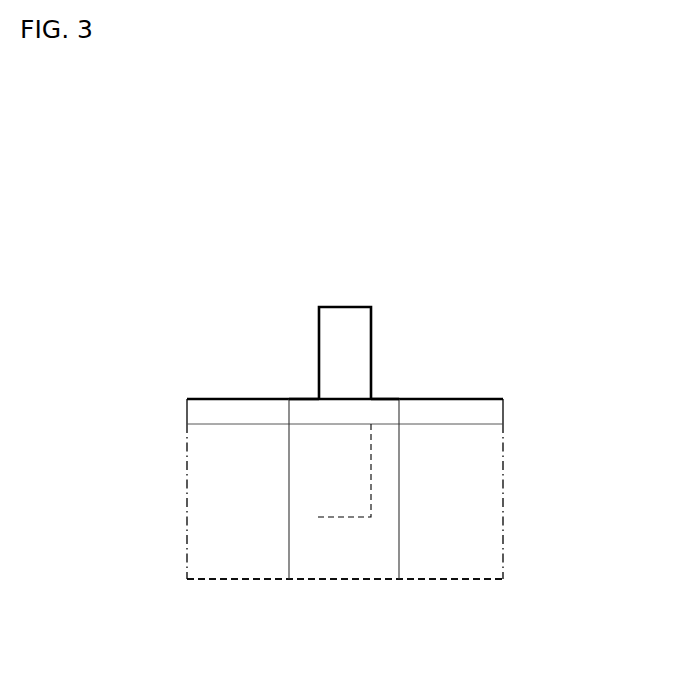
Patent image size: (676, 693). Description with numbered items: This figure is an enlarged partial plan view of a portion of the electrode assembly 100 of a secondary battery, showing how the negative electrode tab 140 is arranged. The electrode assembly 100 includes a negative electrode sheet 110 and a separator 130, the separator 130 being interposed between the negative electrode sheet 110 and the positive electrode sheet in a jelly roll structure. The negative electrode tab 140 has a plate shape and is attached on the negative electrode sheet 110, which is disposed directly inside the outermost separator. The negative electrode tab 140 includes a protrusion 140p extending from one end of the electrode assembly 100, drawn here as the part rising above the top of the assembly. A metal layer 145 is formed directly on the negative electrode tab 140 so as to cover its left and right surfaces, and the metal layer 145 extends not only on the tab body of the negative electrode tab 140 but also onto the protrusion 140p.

The electrode assembly 100 is at (480, 392).
The negative electrode sheet 110 is at (438, 572).
The separator 130 is at (495, 408).
The negative electrode tab 140 is at (327, 433).
The protrusion 140p is at (325, 323).
The metal layer 145 is at (380, 463).